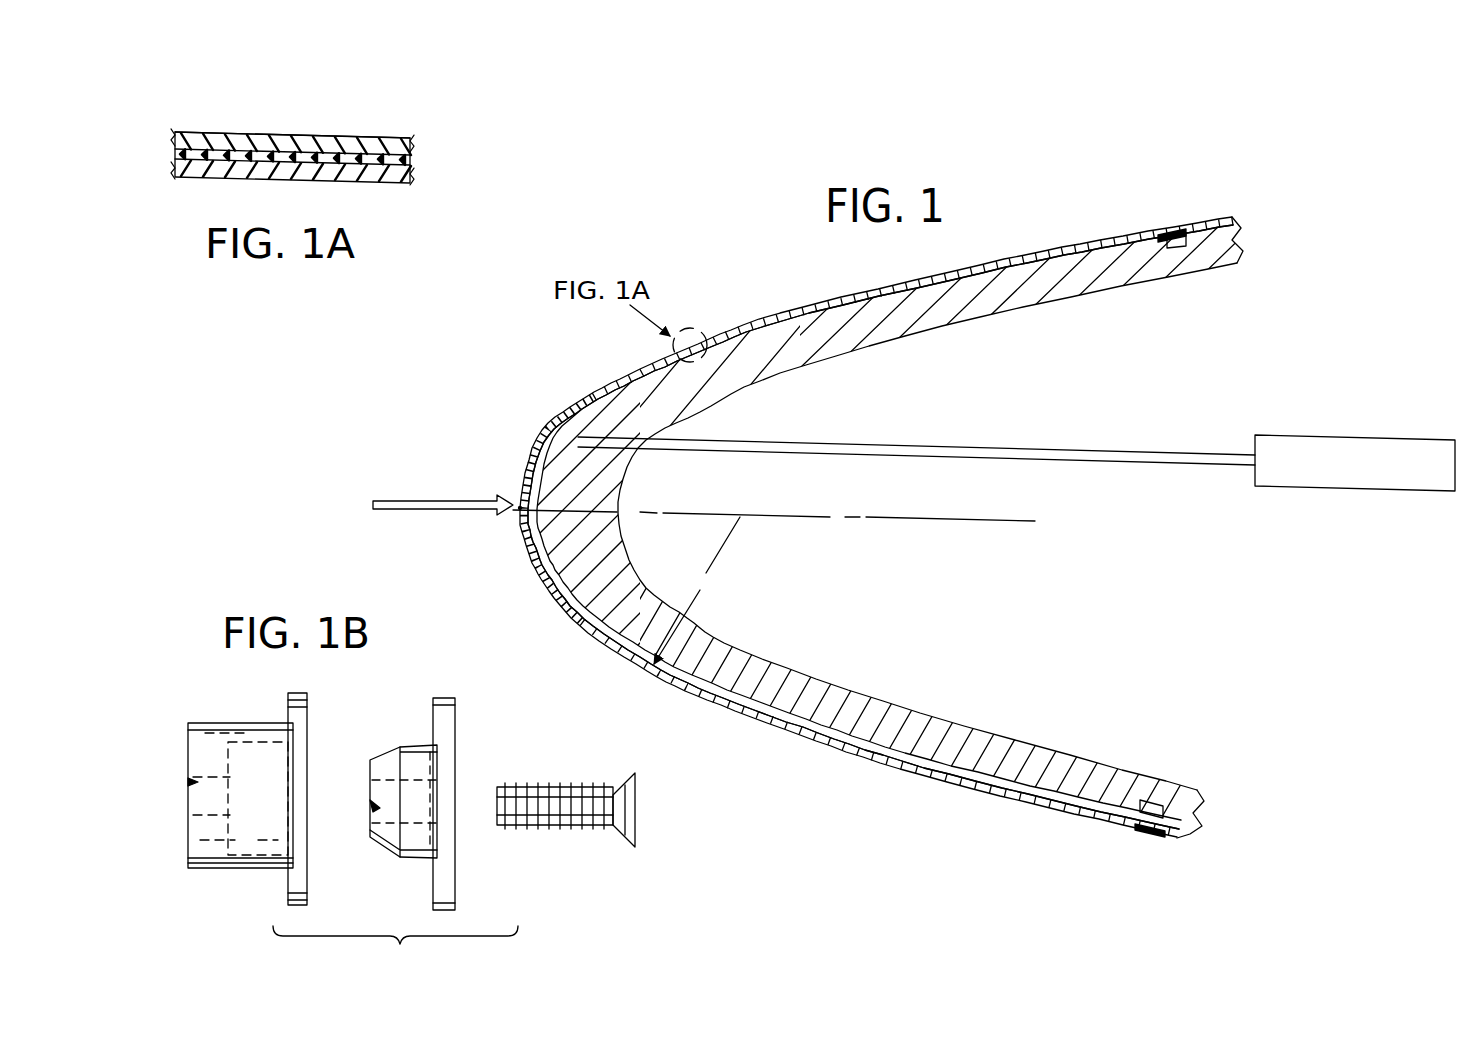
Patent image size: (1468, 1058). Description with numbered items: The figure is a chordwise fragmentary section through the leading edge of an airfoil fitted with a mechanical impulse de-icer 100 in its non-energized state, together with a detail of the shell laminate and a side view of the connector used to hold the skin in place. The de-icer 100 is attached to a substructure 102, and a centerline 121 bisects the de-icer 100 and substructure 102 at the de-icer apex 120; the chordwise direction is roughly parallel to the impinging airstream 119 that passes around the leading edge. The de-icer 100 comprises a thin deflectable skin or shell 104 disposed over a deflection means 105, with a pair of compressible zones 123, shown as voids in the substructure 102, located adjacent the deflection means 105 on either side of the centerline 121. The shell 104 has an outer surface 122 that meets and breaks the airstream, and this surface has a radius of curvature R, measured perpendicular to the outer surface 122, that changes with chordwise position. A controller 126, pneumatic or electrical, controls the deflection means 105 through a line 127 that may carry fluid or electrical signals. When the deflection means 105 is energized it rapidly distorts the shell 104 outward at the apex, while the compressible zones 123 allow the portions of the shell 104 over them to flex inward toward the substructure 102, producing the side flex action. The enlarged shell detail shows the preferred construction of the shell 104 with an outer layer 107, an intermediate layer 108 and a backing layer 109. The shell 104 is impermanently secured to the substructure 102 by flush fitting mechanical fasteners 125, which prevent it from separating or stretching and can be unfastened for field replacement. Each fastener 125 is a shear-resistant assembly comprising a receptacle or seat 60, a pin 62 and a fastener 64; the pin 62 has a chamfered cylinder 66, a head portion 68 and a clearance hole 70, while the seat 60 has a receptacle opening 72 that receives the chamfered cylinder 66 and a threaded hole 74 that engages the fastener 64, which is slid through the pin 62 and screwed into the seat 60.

In FIG. 1B, the receptacle or seat 60 is at (222, 869).
In FIG. 1B, the pin 62 is at (377, 798).
In FIG. 1B, the fastener 64 is at (566, 820).
In FIG. 1B, the chamfered cylinder 66 is at (392, 751).
In FIG. 1B, the head portion 68 is at (458, 727).
In FIG. 1B, the clearance hole 70 is at (372, 803).
In FIG. 1B, the receptacle opening 72 is at (258, 742).
In FIG. 1B, the threaded hole 74 is at (194, 781).
In FIG. 1, the de-icer 100 is at (803, 527).
In FIG. 1, the substructure 102 is at (1131, 280).
In FIG. 1A, the skin or shell 104 is at (216, 120).
In FIG. 1, the skin or shell 104 is at (1238, 217).
In FIG. 1, the deflection means 105 is at (546, 568).
In FIG. 1A, the outer layer 107 is at (390, 138).
In FIG. 1A, the intermediate layer 108 is at (347, 150).
In FIG. 1A, the backing layer 109 is at (376, 172).
In FIG. 1, the impinging airstream 119 is at (421, 500).
In FIG. 1, the de-icer apex 120 is at (518, 512).
In FIG. 1, the centerline 121 is at (969, 520).
In FIG. 1A, the outer surface 122 is at (270, 133).
In FIG. 1, the outer surface 122 is at (922, 539).
In FIG. 1, the compressible zones 123 is at (840, 306).
In FIG. 1, the mechanical fasteners 125 is at (1178, 213).
In FIG. 1B, the mechanical fasteners 125 is at (207, 789).
In FIG. 1, the controller 126 is at (1366, 440).
In FIG. 1, the line 127 is at (992, 451).
In FIG. 1, the radius of curvature R is at (697, 590).